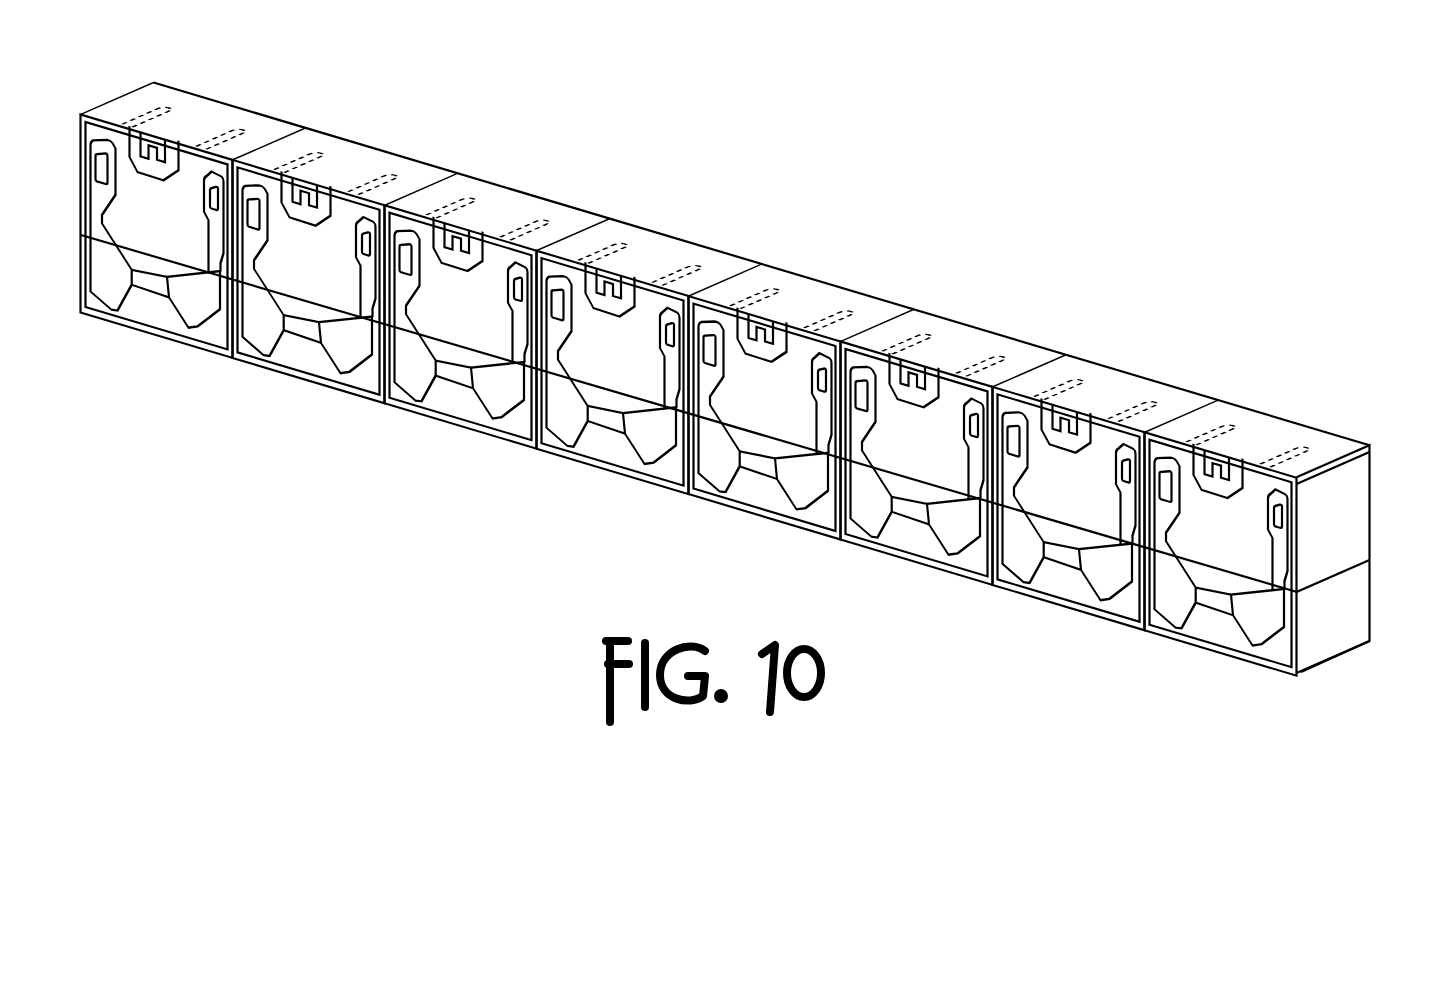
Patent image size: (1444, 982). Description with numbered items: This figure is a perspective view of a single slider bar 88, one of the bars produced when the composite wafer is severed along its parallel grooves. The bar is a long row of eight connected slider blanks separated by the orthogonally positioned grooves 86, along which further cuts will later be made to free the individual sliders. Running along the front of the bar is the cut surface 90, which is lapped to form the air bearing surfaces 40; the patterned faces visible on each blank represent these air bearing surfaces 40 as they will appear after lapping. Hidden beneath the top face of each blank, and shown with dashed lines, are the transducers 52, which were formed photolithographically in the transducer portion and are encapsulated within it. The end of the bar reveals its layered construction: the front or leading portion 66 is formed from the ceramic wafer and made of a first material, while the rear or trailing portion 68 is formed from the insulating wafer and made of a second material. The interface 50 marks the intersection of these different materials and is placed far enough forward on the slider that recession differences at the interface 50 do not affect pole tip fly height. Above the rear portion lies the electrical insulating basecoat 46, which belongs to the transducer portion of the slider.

The slider bar 88 is at (1238, 346).
The air bearing surface 40 is at (638, 435).
The transducer 52 is at (1072, 375).
The grooves 86 is at (580, 233).
The electrical insulating basecoat 46 is at (1342, 452).
The rear portion 68 is at (1357, 478).
The interface 50 is at (1348, 570).
The front portion 66 is at (1358, 608).
The cut surface 90 is at (462, 392).